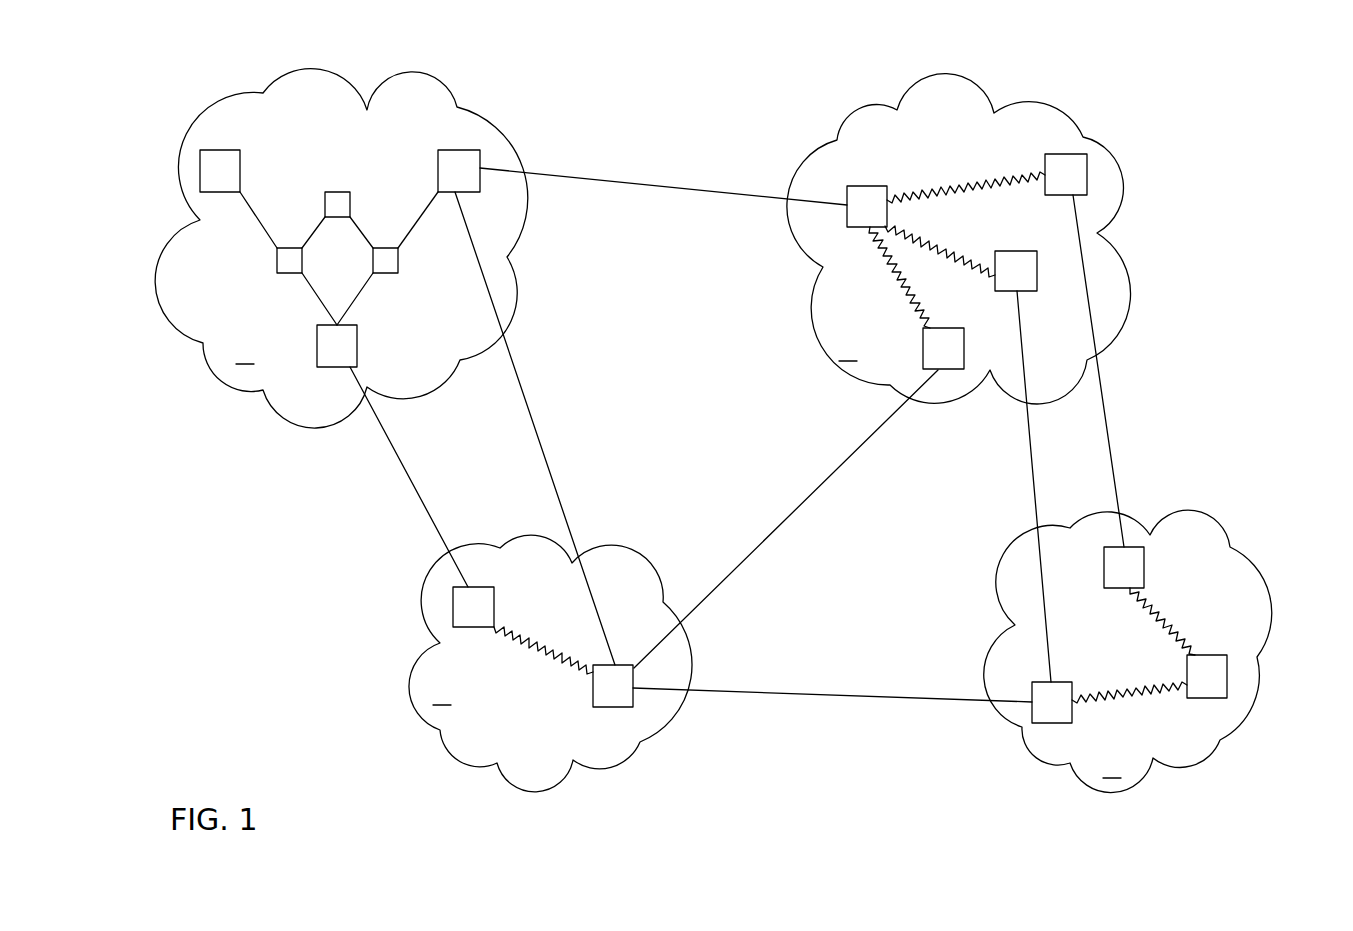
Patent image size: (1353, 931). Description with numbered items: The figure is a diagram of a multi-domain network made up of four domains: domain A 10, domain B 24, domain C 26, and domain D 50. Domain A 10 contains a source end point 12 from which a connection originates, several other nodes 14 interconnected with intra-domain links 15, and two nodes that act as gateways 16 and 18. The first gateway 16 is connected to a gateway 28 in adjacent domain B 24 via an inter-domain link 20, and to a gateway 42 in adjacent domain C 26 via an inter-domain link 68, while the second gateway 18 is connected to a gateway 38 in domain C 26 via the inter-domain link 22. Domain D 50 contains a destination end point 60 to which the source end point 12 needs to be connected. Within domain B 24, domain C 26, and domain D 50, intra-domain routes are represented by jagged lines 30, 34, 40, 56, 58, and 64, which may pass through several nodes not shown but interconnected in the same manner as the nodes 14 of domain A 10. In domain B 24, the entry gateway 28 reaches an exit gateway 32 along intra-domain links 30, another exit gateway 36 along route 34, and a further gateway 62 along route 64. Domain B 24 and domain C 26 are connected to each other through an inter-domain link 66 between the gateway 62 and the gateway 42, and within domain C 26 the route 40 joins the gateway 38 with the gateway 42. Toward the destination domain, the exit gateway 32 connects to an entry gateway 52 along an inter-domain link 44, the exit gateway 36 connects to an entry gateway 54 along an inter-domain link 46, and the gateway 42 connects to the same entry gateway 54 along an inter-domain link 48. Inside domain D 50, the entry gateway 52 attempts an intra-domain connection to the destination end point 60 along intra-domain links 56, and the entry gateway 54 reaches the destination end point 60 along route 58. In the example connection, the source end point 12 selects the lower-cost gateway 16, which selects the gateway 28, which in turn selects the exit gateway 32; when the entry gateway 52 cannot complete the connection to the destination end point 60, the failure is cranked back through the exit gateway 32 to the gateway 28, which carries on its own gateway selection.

The domain A 10 is at (195, 214).
The source end point 12 is at (215, 150).
The nodes 14 is at (337, 191).
The intra-domain links 15 is at (262, 228).
The gateway G1 16 is at (455, 150).
The gateway G2 18 is at (330, 367).
The inter-domain link 20 is at (636, 180).
The inter-domain link 22 is at (398, 470).
The domain B 24 is at (1120, 211).
The domain C 26 is at (405, 688).
The gateway G3 28 is at (868, 186).
The intra-domain links 30 is at (960, 182).
The gateway G5 32 is at (1048, 162).
The intra-domain route 34 is at (950, 248).
The gateway G4 36 is at (1035, 287).
The gateway G6 38 is at (496, 597).
The intra-domain route 40 is at (540, 650).
The gateway G7 42 is at (607, 707).
The inter-domain link 44 is at (1118, 456).
The inter-domain link 46 is at (1026, 483).
The inter-domain link 48 is at (865, 697).
The domain D 50 is at (1270, 607).
The gateway G8 52 is at (1146, 565).
The gateway G9 54 is at (1074, 716).
The intra-domain links 56 is at (1140, 614).
The intra-domain route 58 is at (1150, 704).
The destination end point 60 is at (1207, 699).
The gateway G10 62 is at (922, 348).
The intra-domain route 64 is at (888, 283).
The inter-domain link 66 is at (795, 513).
The inter-domain link 68 is at (565, 482).